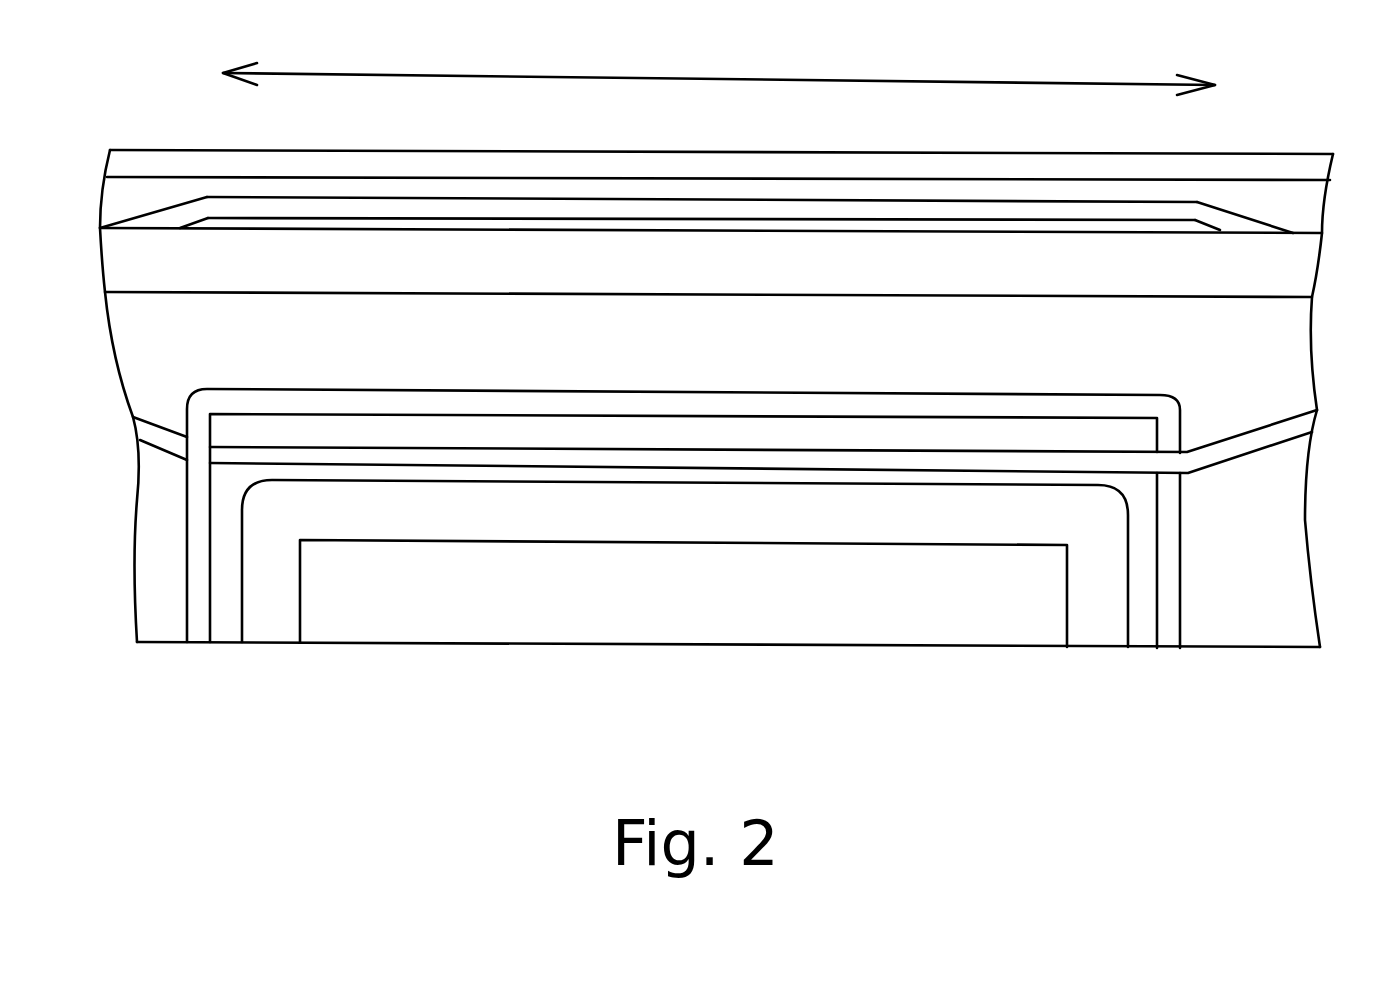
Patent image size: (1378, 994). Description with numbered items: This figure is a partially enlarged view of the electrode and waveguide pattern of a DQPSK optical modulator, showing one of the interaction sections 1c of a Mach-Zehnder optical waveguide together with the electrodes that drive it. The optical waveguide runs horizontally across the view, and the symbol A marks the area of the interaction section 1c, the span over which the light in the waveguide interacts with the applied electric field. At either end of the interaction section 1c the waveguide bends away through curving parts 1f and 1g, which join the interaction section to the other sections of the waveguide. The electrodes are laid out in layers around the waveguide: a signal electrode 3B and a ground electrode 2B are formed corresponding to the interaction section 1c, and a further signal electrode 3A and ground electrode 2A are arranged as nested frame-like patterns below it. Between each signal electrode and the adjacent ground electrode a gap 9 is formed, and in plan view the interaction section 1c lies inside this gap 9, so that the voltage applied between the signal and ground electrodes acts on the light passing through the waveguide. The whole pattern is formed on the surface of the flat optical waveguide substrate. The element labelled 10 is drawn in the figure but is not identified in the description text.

The area of the interaction section A is at (767, 78).
The curving part 1f is at (210, 200).
The interaction section 1c is at (832, 207).
The signal electrode 3B is at (948, 170).
The curving part 1g is at (1197, 203).
The gap 9 is at (413, 232).
The substrate body 10 is at (750, 357).
The ground electrode 2B is at (917, 270).
The signal electrode 3A is at (598, 405).
The ground electrode 2A is at (675, 527).